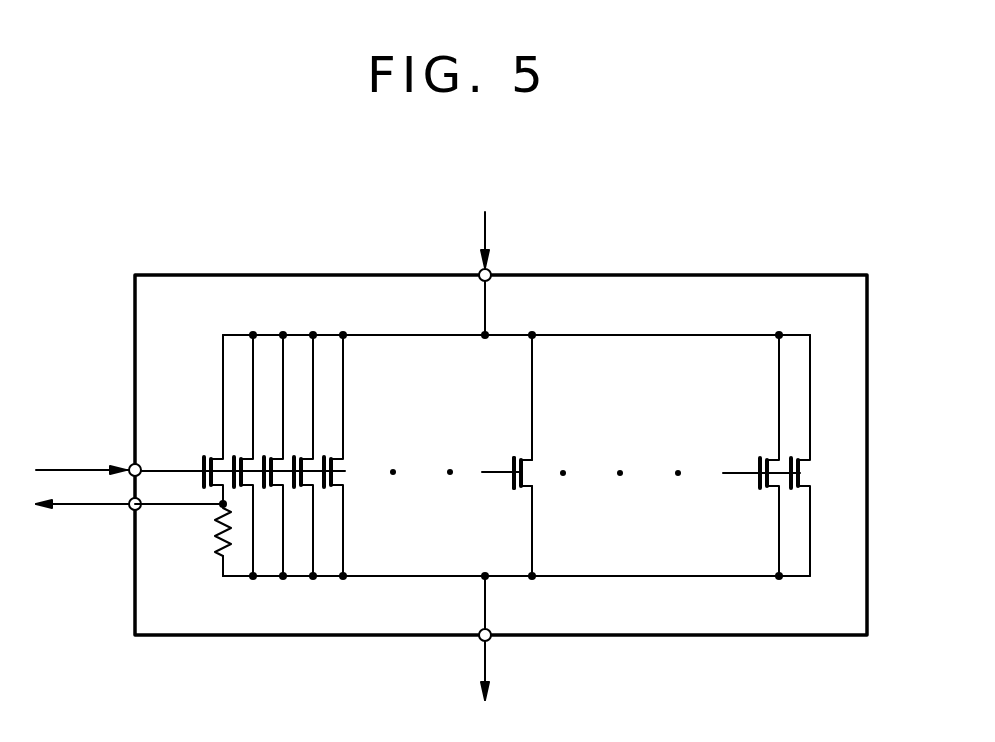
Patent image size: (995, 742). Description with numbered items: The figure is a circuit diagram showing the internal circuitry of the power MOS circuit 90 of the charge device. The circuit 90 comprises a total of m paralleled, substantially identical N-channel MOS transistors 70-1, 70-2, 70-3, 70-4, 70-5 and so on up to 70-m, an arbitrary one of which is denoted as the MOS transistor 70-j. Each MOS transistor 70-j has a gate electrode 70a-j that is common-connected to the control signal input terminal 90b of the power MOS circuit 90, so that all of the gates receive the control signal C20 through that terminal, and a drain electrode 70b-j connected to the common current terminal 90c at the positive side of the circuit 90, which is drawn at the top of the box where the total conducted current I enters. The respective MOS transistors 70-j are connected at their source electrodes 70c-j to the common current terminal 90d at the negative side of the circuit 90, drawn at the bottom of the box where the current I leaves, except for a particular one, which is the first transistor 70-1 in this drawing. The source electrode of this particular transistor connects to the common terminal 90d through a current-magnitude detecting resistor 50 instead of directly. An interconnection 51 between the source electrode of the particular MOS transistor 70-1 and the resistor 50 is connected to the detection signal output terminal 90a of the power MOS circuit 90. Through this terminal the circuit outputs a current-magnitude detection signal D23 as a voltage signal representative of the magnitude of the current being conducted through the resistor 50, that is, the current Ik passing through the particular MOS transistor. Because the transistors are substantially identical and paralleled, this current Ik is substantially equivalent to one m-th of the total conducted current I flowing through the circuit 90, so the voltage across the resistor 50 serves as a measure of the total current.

The power MOS circuit 90 is at (760, 640).
The detection signal output terminal 90a is at (132, 509).
The control signal input terminal 90b is at (132, 466).
The common current terminal at positive side 90c is at (480, 270).
The common current terminal at negative side 90d is at (478, 641).
The current-magnitude detecting resistor 50 is at (212, 540).
The interconnection 51 is at (216, 507).
The current passing the particular MOS transistor Ik is at (212, 566).
The total conducted current I is at (488, 673).
The control signal C20 is at (93, 468).
The current-magnitude detection signal D23 is at (85, 508).
The MOS transistor 70-1 is at (208, 456).
The MOS transistor 70-2 is at (238, 456).
The MOS transistor 70-3 is at (278, 492).
The MOS transistor 70-4 is at (314, 455).
The MOS transistor 70-5 is at (342, 478).
The MOS transistor 70-j is at (538, 466).
The gate electrode 70a-j is at (508, 487).
The drain electrode 70b-j is at (527, 453).
The source electrode 70c-j is at (535, 488).
The MOS transistor 70-m is at (796, 492).